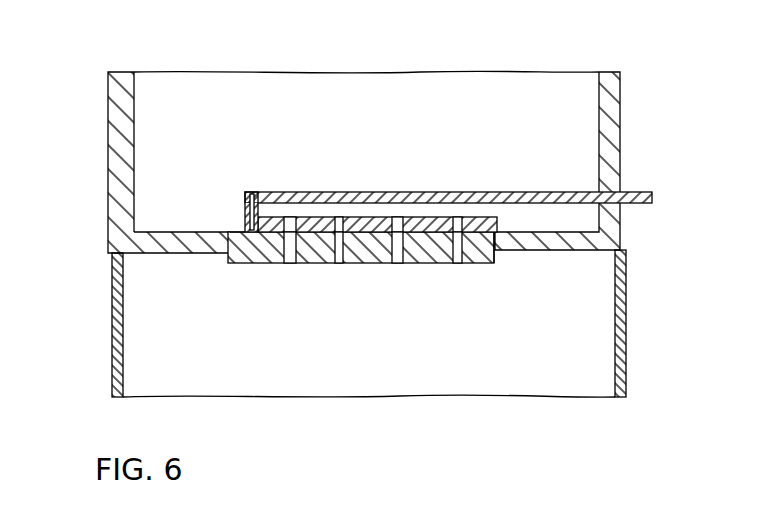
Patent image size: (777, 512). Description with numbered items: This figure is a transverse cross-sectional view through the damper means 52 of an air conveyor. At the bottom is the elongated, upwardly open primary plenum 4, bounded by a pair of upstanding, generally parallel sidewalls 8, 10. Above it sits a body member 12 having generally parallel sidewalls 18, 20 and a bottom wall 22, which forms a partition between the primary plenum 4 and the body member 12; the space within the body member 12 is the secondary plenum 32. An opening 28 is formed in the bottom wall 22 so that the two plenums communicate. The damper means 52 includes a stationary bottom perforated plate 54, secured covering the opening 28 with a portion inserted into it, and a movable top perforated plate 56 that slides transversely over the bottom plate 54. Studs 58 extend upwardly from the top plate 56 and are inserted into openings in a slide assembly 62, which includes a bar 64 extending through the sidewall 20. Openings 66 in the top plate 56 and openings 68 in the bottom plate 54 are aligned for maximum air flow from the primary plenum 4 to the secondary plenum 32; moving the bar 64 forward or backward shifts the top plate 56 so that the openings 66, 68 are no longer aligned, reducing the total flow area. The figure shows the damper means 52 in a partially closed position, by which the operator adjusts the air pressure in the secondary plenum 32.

The primary plenum 4 is at (596, 299).
The sidewall 8 is at (112, 334).
The sidewall 10 is at (625, 342).
The body member 12 is at (622, 105).
The sidewall 18 is at (112, 146).
The sidewall 20 is at (612, 155).
The bottom wall 22 is at (160, 255).
The opening 28 is at (243, 231).
The secondary plenum 32 is at (555, 85).
The damper means 52 is at (337, 263).
The bottom perforated plate 54 is at (484, 263).
The top perforated plate 56 is at (491, 214).
The stud 58 is at (243, 195).
The slide assembly 62 is at (290, 192).
The bar 64 is at (652, 192).
The opening 66 is at (458, 230).
The opening 68 is at (455, 263).